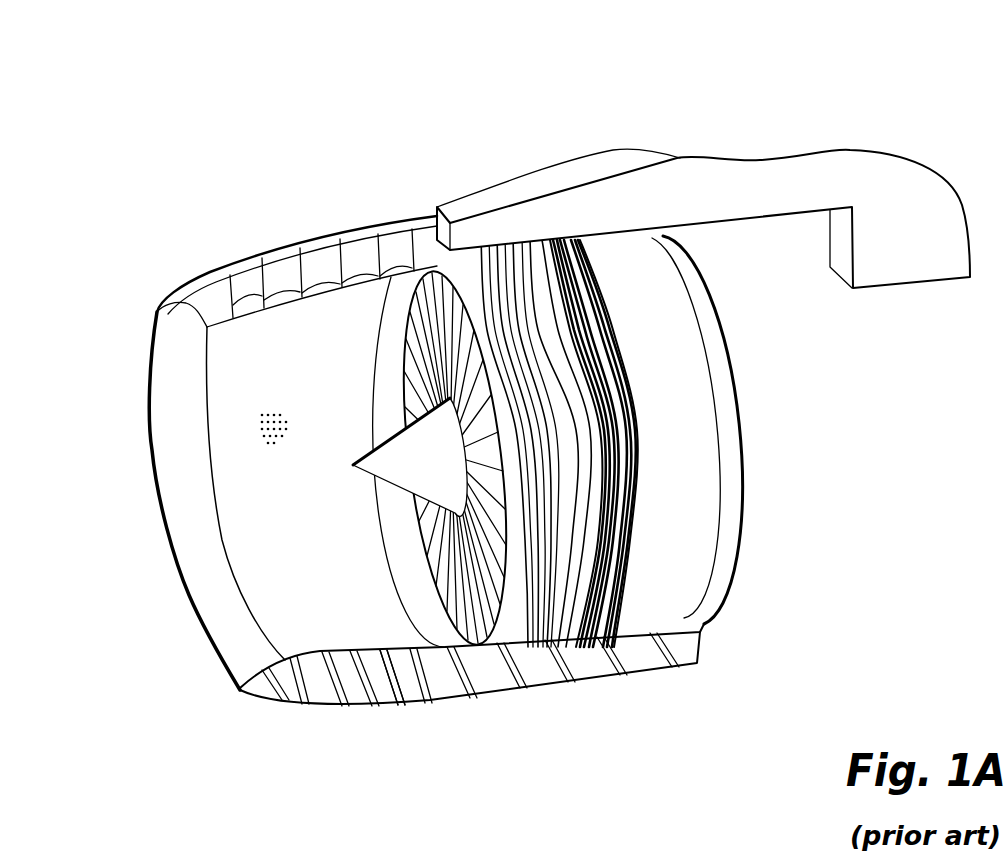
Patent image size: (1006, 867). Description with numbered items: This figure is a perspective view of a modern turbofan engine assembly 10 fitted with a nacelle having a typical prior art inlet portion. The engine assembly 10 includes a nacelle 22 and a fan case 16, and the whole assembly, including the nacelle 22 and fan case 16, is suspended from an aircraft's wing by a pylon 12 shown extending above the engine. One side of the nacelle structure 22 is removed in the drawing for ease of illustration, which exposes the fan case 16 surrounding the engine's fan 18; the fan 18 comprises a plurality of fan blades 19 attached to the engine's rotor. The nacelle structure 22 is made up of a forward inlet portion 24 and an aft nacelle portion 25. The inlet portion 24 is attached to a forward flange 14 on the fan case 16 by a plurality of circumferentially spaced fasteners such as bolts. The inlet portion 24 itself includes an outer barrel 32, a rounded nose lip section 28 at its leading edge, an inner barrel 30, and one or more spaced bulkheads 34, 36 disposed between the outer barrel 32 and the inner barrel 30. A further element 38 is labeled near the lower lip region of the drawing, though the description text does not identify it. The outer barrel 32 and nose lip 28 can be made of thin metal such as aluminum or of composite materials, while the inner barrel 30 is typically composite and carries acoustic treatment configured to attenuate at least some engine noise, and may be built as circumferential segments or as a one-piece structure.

The turbofan engine assembly 10 is at (247, 103).
The pylon 12 is at (677, 157).
The forward flange 14 is at (433, 445).
The fan case 16 is at (472, 690).
The fan 18 is at (427, 555).
The fan blades 19 is at (407, 333).
The nacelle 22 is at (652, 677).
The inlet portion 24 is at (297, 257).
The aft nacelle portion 25 is at (507, 697).
The nose lip section 28 is at (243, 689).
The inner barrel 30 is at (355, 648).
The outer barrel 32 is at (292, 266).
The bulkhead 34 is at (383, 706).
The bulkhead 36 is at (450, 700).
The outer wall 38 is at (243, 688).